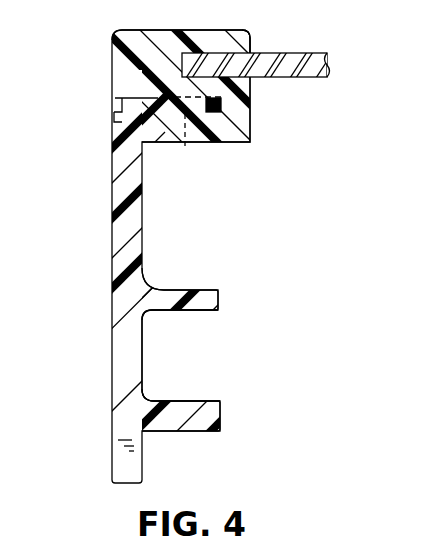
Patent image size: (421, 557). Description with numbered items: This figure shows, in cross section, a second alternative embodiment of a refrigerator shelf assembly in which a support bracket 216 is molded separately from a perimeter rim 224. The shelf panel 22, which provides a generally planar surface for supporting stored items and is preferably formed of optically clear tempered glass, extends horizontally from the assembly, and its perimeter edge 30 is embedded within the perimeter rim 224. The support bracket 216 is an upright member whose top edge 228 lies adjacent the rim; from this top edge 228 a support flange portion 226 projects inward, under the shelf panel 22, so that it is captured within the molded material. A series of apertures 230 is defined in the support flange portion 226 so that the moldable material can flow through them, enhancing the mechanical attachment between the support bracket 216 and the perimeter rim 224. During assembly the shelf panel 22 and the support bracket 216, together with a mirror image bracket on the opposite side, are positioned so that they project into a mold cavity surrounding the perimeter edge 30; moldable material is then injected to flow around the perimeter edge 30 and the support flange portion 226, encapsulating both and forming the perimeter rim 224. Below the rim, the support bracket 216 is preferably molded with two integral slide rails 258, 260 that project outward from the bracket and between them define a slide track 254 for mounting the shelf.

The shelf panel 22 is at (324, 73).
The perimeter edge 30 is at (178, 60).
The support bracket 216 is at (118, 233).
The perimeter rim 224 is at (138, 33).
The support flange portion 226 is at (125, 98).
The top edge 228 is at (120, 113).
The apertures 230 is at (186, 140).
The slide track 254 is at (217, 355).
The slide rail 258 is at (163, 296).
The slide rail 260 is at (160, 425).